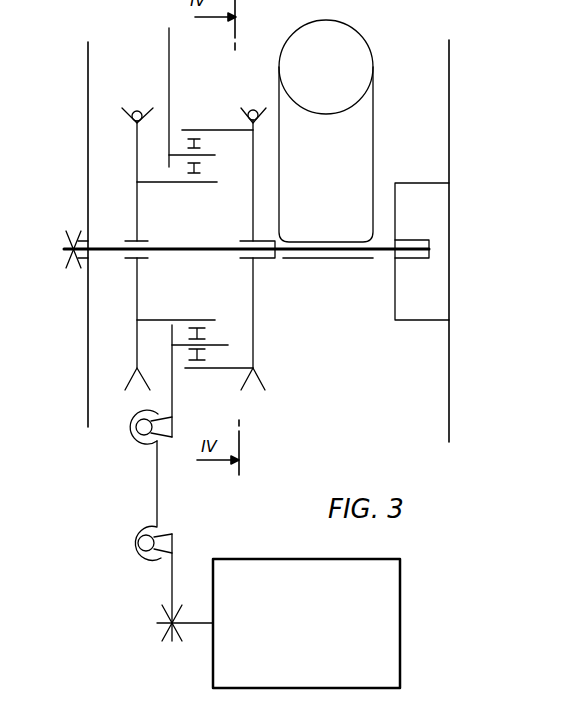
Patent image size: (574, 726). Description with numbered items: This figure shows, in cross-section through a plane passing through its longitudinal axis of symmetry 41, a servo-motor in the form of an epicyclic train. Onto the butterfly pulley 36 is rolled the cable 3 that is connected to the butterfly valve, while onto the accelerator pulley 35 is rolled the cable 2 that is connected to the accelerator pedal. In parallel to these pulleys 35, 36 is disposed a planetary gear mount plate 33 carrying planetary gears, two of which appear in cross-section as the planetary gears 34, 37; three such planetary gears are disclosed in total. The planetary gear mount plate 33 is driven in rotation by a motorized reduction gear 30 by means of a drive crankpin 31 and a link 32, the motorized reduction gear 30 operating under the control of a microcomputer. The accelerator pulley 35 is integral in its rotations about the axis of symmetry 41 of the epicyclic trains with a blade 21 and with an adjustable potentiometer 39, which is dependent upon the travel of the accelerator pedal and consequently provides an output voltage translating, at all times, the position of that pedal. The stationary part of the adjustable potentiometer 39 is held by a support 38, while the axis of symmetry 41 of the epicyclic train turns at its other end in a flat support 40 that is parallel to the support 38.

The cable 2 is at (255, 107).
The cable 3 is at (137, 134).
The blade 21 is at (361, 137).
The motorized reduction gear 30 is at (306, 623).
The drive crankpin 31 is at (170, 578).
The link 32 is at (157, 485).
The planetary gear mount plate 33 is at (169, 70).
The planetary gear 34 is at (198, 165).
The accelerator pulley 35 is at (253, 198).
The butterfly pulley 36 is at (137, 311).
The planetary gear 37 is at (203, 337).
The support 38 is at (450, 123).
The adjustable potentiometer 39 is at (435, 295).
The flat support 40 is at (88, 325).
The axis of symmetry 41 is at (181, 247).